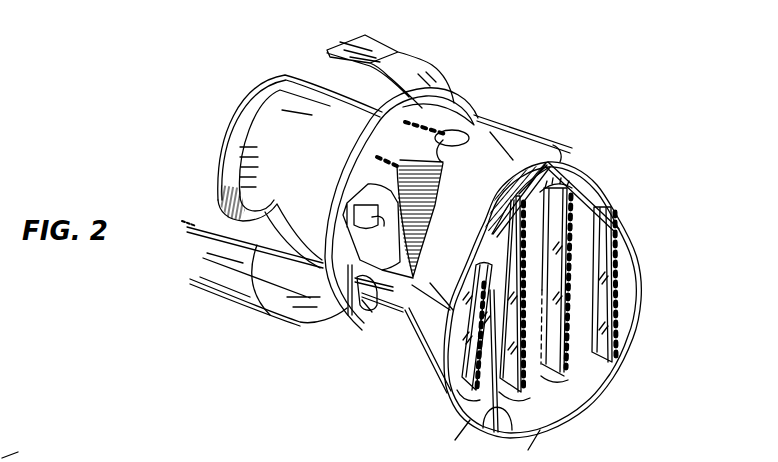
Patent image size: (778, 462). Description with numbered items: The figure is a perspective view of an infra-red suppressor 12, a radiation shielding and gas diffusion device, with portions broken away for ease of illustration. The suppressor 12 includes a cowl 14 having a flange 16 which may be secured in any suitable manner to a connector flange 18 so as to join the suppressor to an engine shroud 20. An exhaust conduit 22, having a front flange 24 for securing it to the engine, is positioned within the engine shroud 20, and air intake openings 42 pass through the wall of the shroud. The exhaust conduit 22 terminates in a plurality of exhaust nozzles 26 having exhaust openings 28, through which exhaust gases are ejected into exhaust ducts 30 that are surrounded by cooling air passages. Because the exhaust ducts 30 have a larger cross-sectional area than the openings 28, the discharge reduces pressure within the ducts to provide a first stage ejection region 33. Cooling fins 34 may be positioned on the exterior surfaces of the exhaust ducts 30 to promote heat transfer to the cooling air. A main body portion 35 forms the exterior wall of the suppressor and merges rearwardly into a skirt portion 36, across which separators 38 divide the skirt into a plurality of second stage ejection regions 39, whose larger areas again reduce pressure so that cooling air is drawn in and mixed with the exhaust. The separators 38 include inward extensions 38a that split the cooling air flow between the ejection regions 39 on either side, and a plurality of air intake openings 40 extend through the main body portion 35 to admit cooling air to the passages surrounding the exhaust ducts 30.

The infra-red suppressor 12 is at (517, 126).
The cowl 14 is at (418, 364).
The flange 16 is at (447, 92).
The connector flange 18 is at (313, 263).
The engine shroud 20 is at (382, 33).
The exhaust conduit 22 is at (327, 104).
The front flange 24 is at (232, 150).
The exhaust nozzles 26 is at (283, 218).
The exhaust openings 28 is at (345, 245).
The exhaust ducts 30 is at (452, 398).
The first stage ejection region 33 is at (356, 203).
The cooling fins 34 is at (606, 216).
The main body portion 35 is at (548, 148).
The skirt portion 36 is at (634, 240).
The separators 38 is at (600, 340).
The inward extensions 38a is at (549, 161).
The second stage ejection regions 39 is at (505, 230).
The air intake openings 40 is at (367, 306).
The air intake openings 42 is at (25, 447).